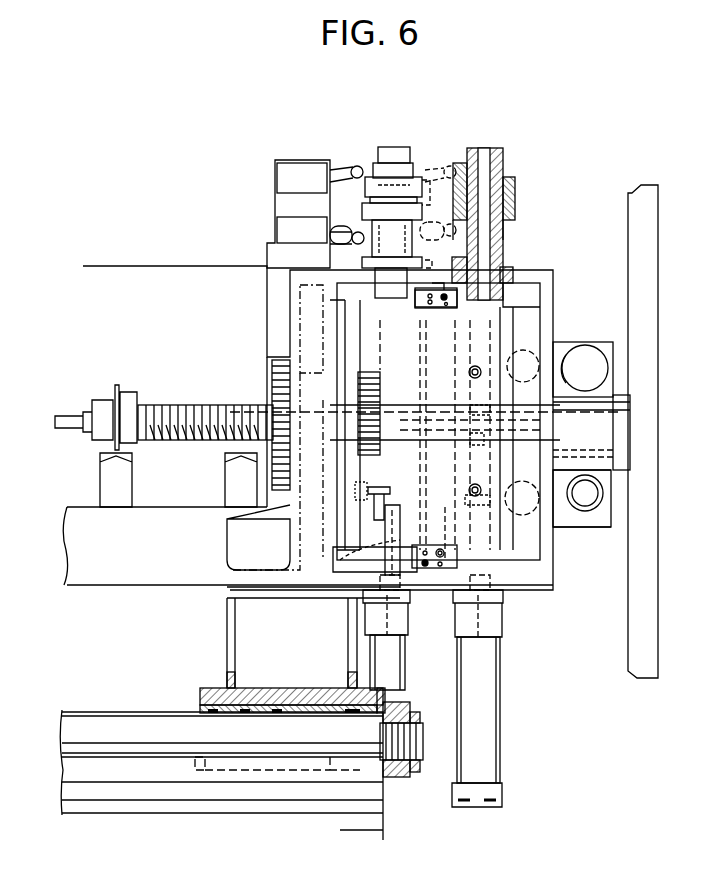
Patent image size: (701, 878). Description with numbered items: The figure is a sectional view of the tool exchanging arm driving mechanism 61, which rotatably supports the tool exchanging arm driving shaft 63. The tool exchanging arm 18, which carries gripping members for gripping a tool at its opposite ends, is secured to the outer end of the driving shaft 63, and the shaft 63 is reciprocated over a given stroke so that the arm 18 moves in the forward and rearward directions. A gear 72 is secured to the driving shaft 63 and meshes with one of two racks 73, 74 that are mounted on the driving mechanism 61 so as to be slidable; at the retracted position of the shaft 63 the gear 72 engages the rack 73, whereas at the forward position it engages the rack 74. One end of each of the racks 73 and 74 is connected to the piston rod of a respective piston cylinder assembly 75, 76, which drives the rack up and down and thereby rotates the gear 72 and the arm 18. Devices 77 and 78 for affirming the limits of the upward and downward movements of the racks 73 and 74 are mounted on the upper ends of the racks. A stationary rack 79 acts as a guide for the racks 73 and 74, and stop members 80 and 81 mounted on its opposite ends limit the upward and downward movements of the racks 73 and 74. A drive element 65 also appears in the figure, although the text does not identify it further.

The tool exchanging arm 18 is at (633, 572).
The tool exchanging arm driving mechanism 61 is at (237, 523).
The tool exchanging arm driving shaft 63 is at (440, 490).
The worm 65 is at (273, 447).
The gear 72 is at (372, 455).
The rack 73 is at (377, 491).
The rack 74 is at (498, 310).
The piston cylinder assembly 75 is at (396, 688).
The piston cylinder assembly 76 is at (483, 698).
The device for affirming limits of movement 77 is at (393, 152).
The device for affirming limits of movement 78 is at (505, 157).
The stationary rack 79 is at (470, 545).
The stop member 80 is at (455, 305).
The stop member 81 is at (452, 550).